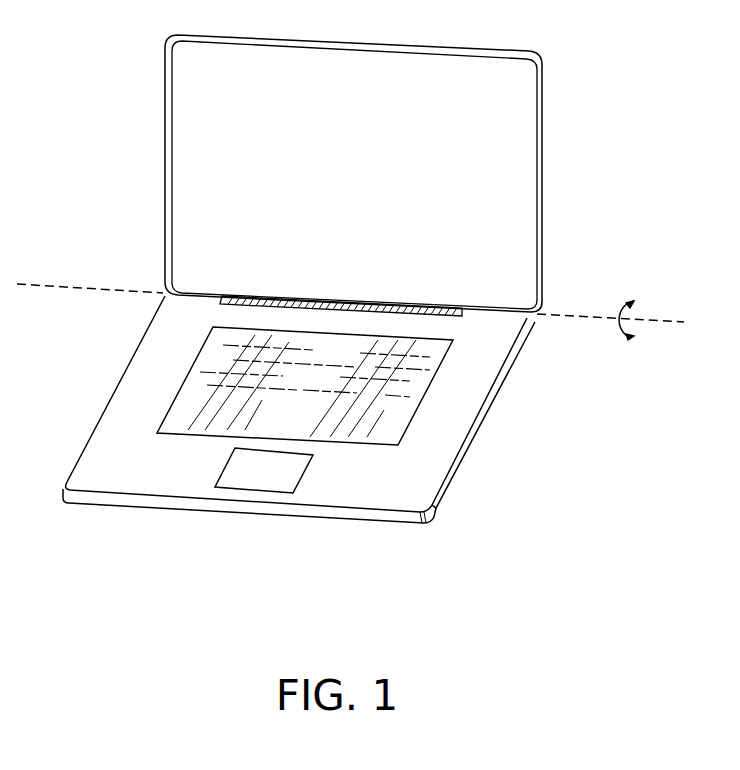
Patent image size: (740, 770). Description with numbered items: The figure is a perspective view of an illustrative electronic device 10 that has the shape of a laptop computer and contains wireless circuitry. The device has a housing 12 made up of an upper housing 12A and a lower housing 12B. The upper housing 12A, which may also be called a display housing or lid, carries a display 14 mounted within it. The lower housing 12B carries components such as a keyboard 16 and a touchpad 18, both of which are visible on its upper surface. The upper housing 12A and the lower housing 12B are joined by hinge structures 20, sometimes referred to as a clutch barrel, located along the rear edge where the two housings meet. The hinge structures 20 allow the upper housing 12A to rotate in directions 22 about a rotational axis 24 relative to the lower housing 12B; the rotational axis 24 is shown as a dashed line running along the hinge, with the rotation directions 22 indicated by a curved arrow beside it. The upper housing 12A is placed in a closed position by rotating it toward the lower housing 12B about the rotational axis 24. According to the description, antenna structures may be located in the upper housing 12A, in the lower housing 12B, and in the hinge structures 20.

The electronic device 10 is at (598, 98).
The housing 12 is at (542, 252).
The upper housing 12A is at (158, 38).
The lower housing 12B is at (147, 297).
The display 14 is at (510, 140).
The keyboard 16 is at (410, 420).
The touchpad 18 is at (258, 492).
The hinge structures 20 is at (433, 311).
The directions 22 is at (624, 342).
The rotational axis 24 is at (30, 283).